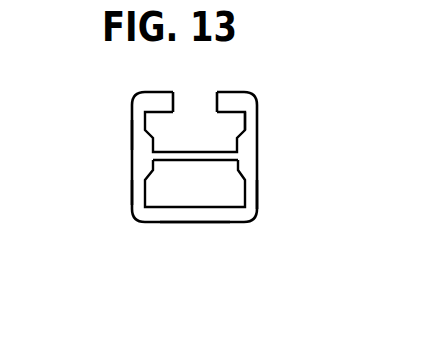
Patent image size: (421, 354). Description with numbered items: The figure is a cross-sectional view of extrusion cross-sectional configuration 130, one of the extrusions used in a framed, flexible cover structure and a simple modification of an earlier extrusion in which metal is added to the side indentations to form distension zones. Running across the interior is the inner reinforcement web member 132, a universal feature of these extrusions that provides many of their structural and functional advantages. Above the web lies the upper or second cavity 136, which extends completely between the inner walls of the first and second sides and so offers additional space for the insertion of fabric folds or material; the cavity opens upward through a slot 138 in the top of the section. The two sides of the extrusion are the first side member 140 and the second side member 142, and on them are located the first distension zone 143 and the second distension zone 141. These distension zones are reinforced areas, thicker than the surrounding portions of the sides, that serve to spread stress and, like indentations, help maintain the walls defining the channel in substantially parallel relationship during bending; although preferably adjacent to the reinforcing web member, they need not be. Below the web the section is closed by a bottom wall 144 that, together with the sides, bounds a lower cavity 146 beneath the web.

The extrusion cross-sectional configuration 130 is at (99, 97).
The inner reinforcement web member 132 is at (217, 159).
The upper or second cavity 136 is at (197, 120).
The slot opening 138 is at (175, 105).
The first side member 140 is at (247, 198).
The second distension zone 141 is at (247, 138).
The second side member 142 is at (142, 198).
The first distension zone 143 is at (141, 148).
The bottom wall 144 is at (202, 216).
The lower channel 146 is at (172, 193).